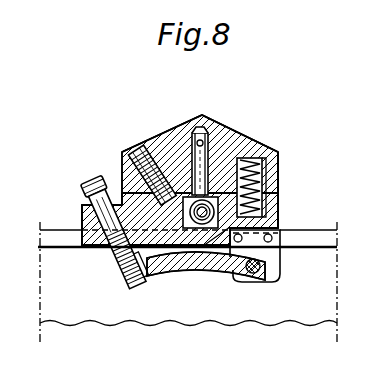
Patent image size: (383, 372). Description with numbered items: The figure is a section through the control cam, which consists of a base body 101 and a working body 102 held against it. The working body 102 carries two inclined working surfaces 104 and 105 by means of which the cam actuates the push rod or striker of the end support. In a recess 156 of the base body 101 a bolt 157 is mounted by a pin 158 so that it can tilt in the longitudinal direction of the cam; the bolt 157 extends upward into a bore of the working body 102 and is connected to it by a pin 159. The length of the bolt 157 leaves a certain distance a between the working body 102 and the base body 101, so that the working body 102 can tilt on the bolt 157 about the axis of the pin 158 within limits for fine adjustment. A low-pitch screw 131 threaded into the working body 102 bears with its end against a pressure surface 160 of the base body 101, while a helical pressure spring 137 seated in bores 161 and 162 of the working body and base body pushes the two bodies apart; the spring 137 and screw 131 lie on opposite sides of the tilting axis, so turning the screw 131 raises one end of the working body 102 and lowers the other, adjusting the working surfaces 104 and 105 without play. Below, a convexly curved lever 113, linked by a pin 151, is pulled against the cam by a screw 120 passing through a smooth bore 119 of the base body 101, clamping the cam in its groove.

The working body 102 is at (232, 127).
The inclined working surface 104 is at (250, 134).
The inclined working surface 105 is at (163, 128).
The bore of working body 161 is at (273, 152).
The pressure surface 160 is at (122, 172).
The smooth bore 119 is at (82, 213).
The distance a is at (278, 193).
The bolt 157 is at (193, 128).
The pin 159 is at (203, 126).
The bore of base body 162 is at (273, 212).
The pressure spring 137 is at (276, 176).
The pin 158 is at (198, 220).
The screw 131 is at (137, 145).
The screw 120 is at (88, 187).
The base body 101 is at (278, 226).
The pin 151 is at (263, 280).
The recess 156 is at (212, 262).
The lever 113 is at (198, 273).